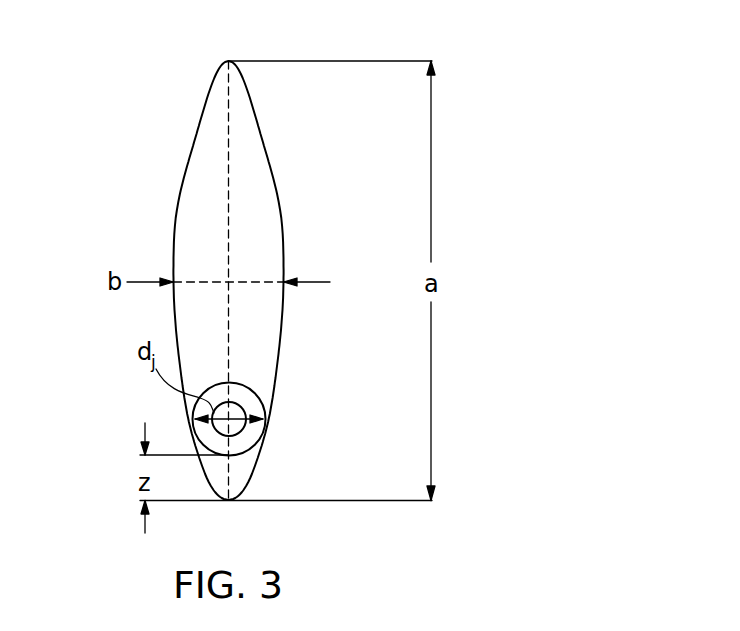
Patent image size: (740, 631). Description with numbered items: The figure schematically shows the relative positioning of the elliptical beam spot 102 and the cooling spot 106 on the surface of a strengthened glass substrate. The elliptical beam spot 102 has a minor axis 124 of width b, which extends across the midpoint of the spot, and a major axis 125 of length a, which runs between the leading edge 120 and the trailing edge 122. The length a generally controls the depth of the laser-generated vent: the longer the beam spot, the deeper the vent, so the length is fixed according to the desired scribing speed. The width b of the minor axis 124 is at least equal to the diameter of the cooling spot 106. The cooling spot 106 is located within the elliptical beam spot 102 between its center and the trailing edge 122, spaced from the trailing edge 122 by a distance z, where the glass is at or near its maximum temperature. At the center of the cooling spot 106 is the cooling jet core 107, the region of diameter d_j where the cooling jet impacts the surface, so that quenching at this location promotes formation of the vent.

The elliptical beam spot 102 is at (168, 152).
The cooling spot 106 is at (255, 392).
The cooling jet core 107 is at (238, 434).
The leading edge 120 is at (328, 61).
The trailing edge 122 is at (328, 501).
The minor axis 124 is at (211, 282).
The major axis 125 is at (229, 152).